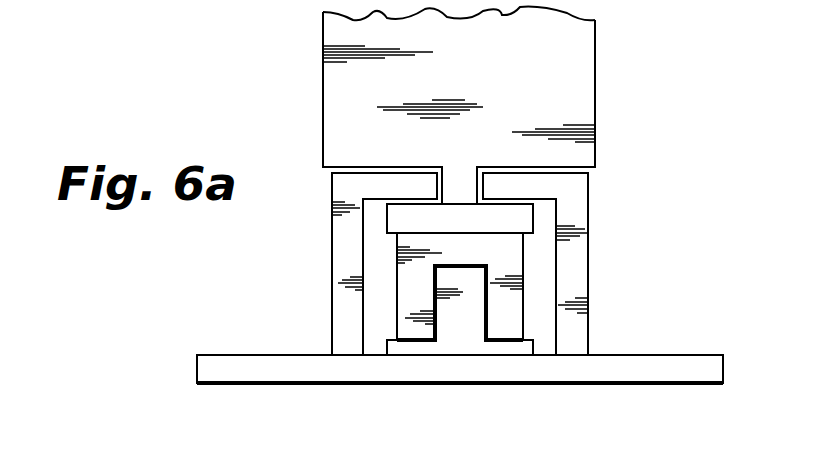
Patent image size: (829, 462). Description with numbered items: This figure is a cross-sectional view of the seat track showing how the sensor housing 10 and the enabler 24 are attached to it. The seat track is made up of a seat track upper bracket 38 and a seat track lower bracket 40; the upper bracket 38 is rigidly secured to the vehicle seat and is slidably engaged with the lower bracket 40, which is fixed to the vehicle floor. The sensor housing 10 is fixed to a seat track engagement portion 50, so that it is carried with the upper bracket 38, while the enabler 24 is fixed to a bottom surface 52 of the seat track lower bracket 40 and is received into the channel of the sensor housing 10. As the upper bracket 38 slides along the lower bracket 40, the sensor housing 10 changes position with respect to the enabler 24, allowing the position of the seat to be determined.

The seat track upper bracket 38 is at (330, 133).
The seat track lower bracket 40 is at (337, 255).
The sensor housing 10 is at (517, 259).
The seat track engagement portion 50 is at (517, 217).
The enabler 24 is at (454, 330).
The bottom surface 52 is at (549, 355).